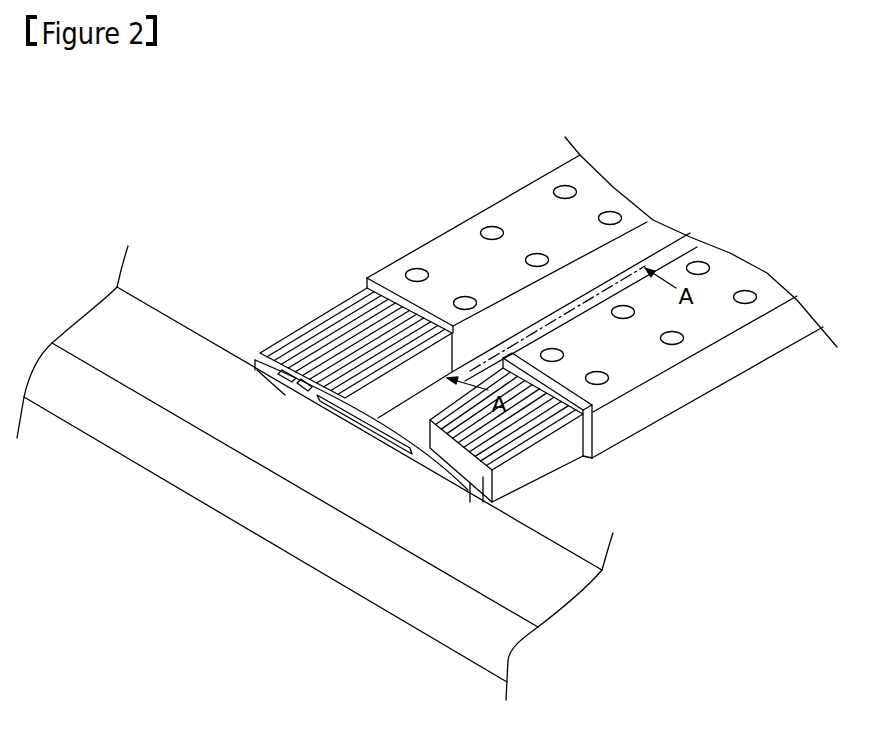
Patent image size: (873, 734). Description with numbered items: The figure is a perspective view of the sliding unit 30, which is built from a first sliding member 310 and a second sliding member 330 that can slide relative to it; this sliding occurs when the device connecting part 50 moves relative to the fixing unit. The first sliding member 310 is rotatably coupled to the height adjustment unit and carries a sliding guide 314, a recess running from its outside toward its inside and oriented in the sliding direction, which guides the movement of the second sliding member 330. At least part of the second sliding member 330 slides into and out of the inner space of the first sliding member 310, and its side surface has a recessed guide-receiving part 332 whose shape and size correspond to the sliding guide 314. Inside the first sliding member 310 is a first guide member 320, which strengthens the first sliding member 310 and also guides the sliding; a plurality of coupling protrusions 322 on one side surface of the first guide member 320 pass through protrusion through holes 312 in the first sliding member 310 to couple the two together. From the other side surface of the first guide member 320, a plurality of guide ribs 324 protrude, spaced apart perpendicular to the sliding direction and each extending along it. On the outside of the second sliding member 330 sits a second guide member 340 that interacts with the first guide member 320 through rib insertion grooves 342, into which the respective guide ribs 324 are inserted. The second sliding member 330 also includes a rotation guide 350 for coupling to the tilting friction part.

The sliding unit 30 is at (360, 165).
The device connecting part 50 is at (213, 480).
The first sliding member 310 is at (553, 170).
The protrusion through holes 312 is at (492, 228).
The sliding guide 314 is at (412, 333).
The first guide member 320 is at (612, 388).
The coupling protrusions 322 is at (417, 270).
The guide ribs 324 is at (600, 455).
The second sliding member 330 is at (548, 471).
The guide-receiving part 332 is at (417, 403).
The second guide member 340 is at (297, 340).
The rib insertion grooves 342 is at (340, 333).
The rotation guide 350 is at (275, 353).